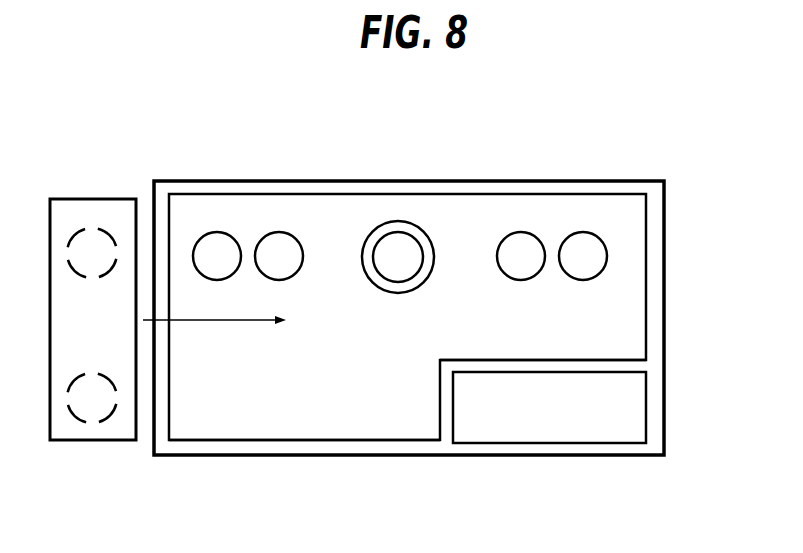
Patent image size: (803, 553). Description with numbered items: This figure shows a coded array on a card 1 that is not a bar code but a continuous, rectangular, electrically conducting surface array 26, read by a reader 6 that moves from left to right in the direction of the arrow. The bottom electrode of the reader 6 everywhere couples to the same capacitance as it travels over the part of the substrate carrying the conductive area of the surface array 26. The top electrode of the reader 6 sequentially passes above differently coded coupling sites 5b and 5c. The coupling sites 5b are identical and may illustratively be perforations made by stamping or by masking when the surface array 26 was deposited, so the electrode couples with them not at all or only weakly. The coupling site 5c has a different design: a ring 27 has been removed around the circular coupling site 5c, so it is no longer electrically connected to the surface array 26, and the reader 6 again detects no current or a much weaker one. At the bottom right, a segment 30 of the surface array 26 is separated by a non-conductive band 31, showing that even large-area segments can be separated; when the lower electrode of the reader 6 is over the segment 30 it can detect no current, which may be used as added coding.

The card 1 is at (655, 222).
The coupling sites 5b is at (279, 250).
The coupling site 5c is at (392, 250).
The ring 27 is at (412, 228).
The non-conductive band 31 is at (613, 340).
The surface array 26 is at (383, 392).
The segment 30 is at (547, 413).
The reader 6 is at (72, 425).